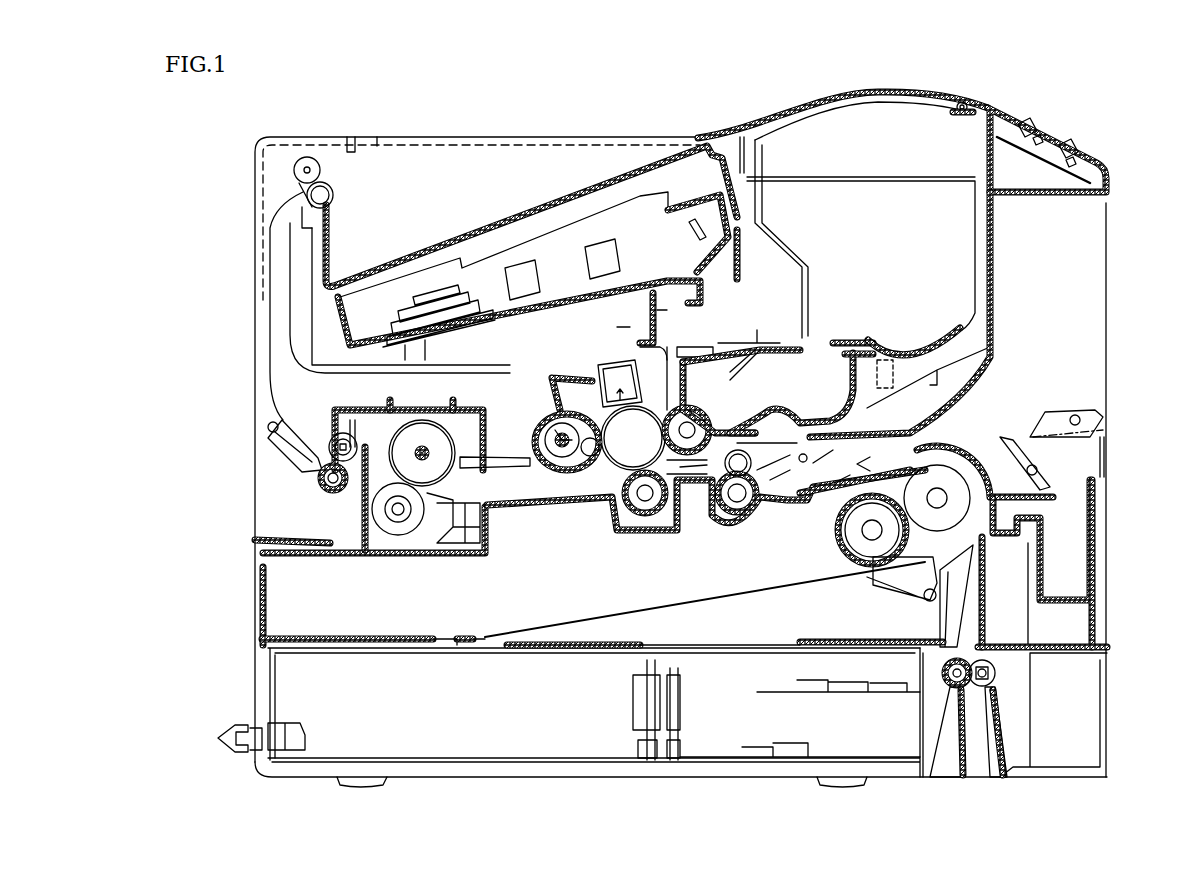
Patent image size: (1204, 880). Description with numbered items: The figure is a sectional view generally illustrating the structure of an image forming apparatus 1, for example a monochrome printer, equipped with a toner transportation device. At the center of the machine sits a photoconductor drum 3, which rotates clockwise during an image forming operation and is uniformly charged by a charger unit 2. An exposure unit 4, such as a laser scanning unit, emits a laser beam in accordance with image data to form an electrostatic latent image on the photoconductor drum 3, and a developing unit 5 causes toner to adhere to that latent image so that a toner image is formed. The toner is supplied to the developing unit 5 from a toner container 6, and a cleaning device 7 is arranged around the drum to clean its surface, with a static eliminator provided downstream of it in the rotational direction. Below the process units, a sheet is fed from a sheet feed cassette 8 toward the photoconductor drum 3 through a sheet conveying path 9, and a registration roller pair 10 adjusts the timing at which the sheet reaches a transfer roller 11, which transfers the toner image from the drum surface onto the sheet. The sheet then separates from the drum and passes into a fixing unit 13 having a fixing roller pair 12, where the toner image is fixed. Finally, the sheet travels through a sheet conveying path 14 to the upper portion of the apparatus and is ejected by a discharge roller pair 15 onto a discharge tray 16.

The image forming apparatus 1 is at (1142, 320).
The charger unit 2 is at (630, 385).
The photoconductor drum 3 is at (680, 487).
The exposure unit 4 is at (612, 228).
The developing unit 5 is at (740, 368).
The toner container 6 is at (937, 290).
The cleaning device 7 is at (565, 470).
The sheet feed cassette 8 is at (825, 728).
The sheet conveying path 9 is at (873, 470).
The registration roller pair 10 is at (737, 493).
The transfer roller 11 is at (637, 513).
The fixing roller pair 12 is at (438, 472).
The fixing unit 13 is at (485, 440).
The sheet conveying path 14 is at (283, 318).
The discharge roller pair 15 is at (318, 178).
The discharge tray 16 is at (561, 193).